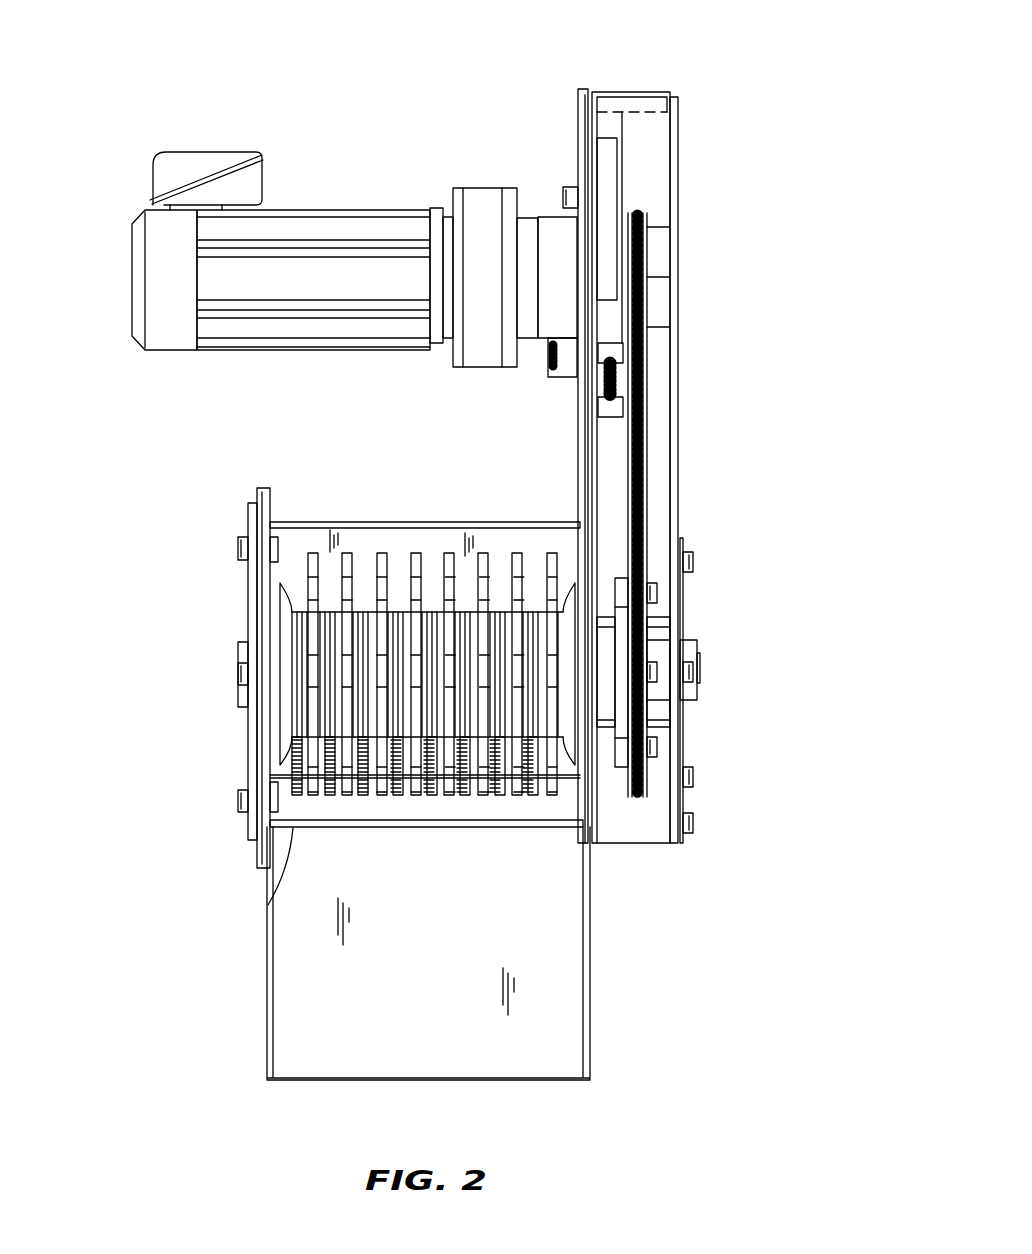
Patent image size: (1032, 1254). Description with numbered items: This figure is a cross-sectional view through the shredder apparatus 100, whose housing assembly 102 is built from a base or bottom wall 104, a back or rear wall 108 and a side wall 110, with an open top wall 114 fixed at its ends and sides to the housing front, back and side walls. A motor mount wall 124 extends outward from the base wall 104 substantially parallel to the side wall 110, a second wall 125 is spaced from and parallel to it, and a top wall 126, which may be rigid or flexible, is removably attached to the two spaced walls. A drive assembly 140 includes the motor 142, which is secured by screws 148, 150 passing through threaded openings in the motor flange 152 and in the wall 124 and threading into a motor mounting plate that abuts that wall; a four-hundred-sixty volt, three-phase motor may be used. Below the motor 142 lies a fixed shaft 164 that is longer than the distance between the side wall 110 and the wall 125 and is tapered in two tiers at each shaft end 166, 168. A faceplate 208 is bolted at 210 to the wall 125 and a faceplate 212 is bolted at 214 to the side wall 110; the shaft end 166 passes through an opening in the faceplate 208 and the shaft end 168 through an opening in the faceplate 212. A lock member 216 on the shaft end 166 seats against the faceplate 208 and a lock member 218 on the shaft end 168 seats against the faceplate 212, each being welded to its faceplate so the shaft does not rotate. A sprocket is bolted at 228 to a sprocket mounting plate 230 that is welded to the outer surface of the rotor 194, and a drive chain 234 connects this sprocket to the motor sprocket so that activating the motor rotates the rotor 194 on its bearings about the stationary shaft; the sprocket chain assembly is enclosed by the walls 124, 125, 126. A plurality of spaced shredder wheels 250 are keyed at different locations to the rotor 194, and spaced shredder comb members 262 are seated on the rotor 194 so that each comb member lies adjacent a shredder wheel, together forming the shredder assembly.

The shredder apparatus 100 is at (192, 447).
The housing assembly 102 is at (443, 882).
The base or bottom wall 104 is at (268, 907).
The back or rear wall 108 is at (289, 537).
The side wall 110 is at (261, 867).
The open top wall 114 is at (430, 521).
The motor mount wall 124 is at (596, 96).
The second wall 125 is at (676, 126).
The top wall 126 is at (626, 92).
The drive assembly 140 is at (381, 78).
The motor 142 is at (285, 225).
The screw 148 is at (566, 195).
The screw 150 is at (551, 356).
The motor flange 152 is at (580, 182).
The fixed shaft 164 is at (699, 662).
The shaft end 166 is at (846, 664).
The shaft end 168 is at (118, 660).
The rotor 194 is at (606, 708).
The faceplate 208 is at (684, 840).
The bolts 210 is at (694, 562).
The faceplate 212 is at (252, 841).
The bolts 214 is at (240, 548).
The lock member 216 is at (692, 693).
The lock member 218 is at (247, 703).
The bolts 228 is at (658, 593).
The sprocket mounting plate 230 is at (624, 582).
The drive chain 234 is at (640, 253).
The shredder wheels 250 is at (416, 552).
The shredder comb members 262 is at (398, 796).